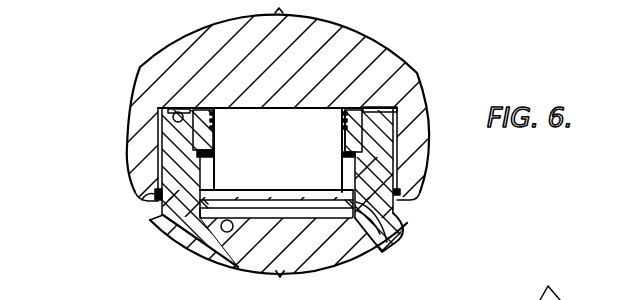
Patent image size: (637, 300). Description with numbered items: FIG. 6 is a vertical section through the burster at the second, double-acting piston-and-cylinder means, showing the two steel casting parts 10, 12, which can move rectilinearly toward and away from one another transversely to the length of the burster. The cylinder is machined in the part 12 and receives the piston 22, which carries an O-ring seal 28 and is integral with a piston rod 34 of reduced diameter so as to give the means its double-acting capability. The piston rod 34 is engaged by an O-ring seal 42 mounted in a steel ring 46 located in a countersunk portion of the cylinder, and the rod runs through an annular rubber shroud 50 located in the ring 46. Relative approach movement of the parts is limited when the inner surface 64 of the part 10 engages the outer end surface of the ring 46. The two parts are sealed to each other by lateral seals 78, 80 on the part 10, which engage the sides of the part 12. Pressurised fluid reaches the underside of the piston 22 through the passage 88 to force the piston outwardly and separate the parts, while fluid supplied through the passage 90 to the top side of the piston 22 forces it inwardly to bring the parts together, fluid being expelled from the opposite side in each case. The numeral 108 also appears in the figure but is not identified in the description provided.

The part 10 is at (387, 60).
The part 12 is at (312, 258).
The piston 22 is at (236, 263).
The O-ring seal 28 is at (393, 240).
The piston rod 34 is at (296, 182).
The O-ring seal 42 is at (345, 127).
The steel ring 46 is at (215, 142).
The annular rubber shroud 50 is at (347, 117).
The inner surface 64 is at (169, 110).
The lateral seal 78 is at (147, 203).
The lateral seal 80 is at (413, 194).
The passage 88 is at (203, 254).
The passage 90 is at (336, 138).
The connector 108 is at (548, 286).